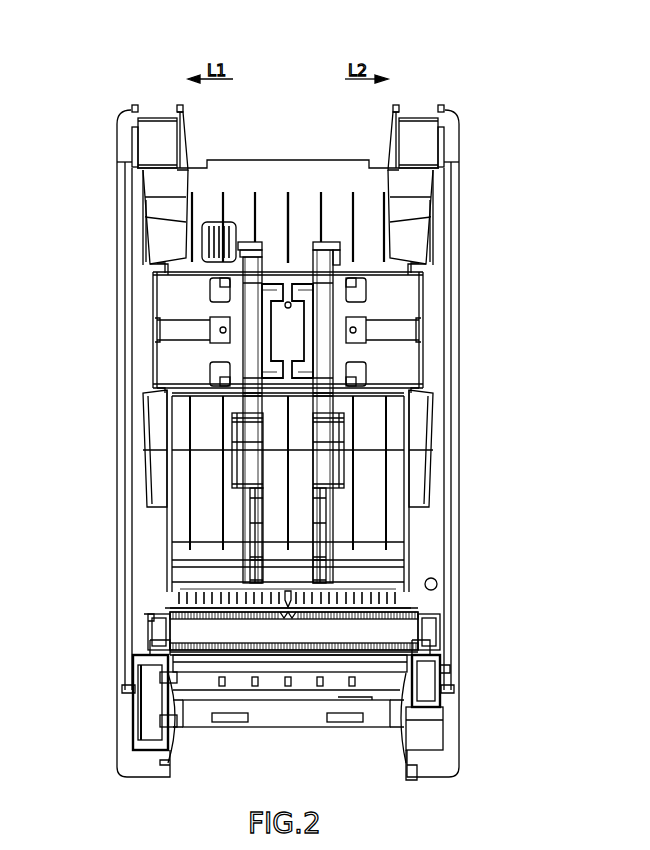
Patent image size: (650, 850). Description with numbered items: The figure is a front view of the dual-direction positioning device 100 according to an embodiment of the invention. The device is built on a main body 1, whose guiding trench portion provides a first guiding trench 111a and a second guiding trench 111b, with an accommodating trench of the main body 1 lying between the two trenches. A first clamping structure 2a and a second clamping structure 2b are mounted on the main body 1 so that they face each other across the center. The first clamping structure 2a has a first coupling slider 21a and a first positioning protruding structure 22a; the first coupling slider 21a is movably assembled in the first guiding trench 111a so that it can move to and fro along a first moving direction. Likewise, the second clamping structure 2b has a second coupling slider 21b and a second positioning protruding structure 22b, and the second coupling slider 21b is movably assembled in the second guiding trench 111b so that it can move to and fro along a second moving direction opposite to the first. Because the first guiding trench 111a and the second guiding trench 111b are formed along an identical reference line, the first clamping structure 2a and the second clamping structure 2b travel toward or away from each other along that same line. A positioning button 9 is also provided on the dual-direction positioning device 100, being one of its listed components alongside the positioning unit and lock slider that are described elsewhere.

The dual-direction positioning device 100 is at (118, 74).
The main body 1 is at (124, 133).
The positioning button 9 is at (232, 222).
The first clamping structure 2a is at (200, 286).
The second clamping structure 2b is at (376, 286).
The first coupling slider 21a is at (210, 318).
The second coupling slider 21b is at (366, 318).
The first guiding trench 111a is at (178, 343).
The second guiding trench 111b is at (398, 343).
The first positioning protruding structure 22a is at (270, 360).
The second positioning protruding structure 22b is at (306, 360).